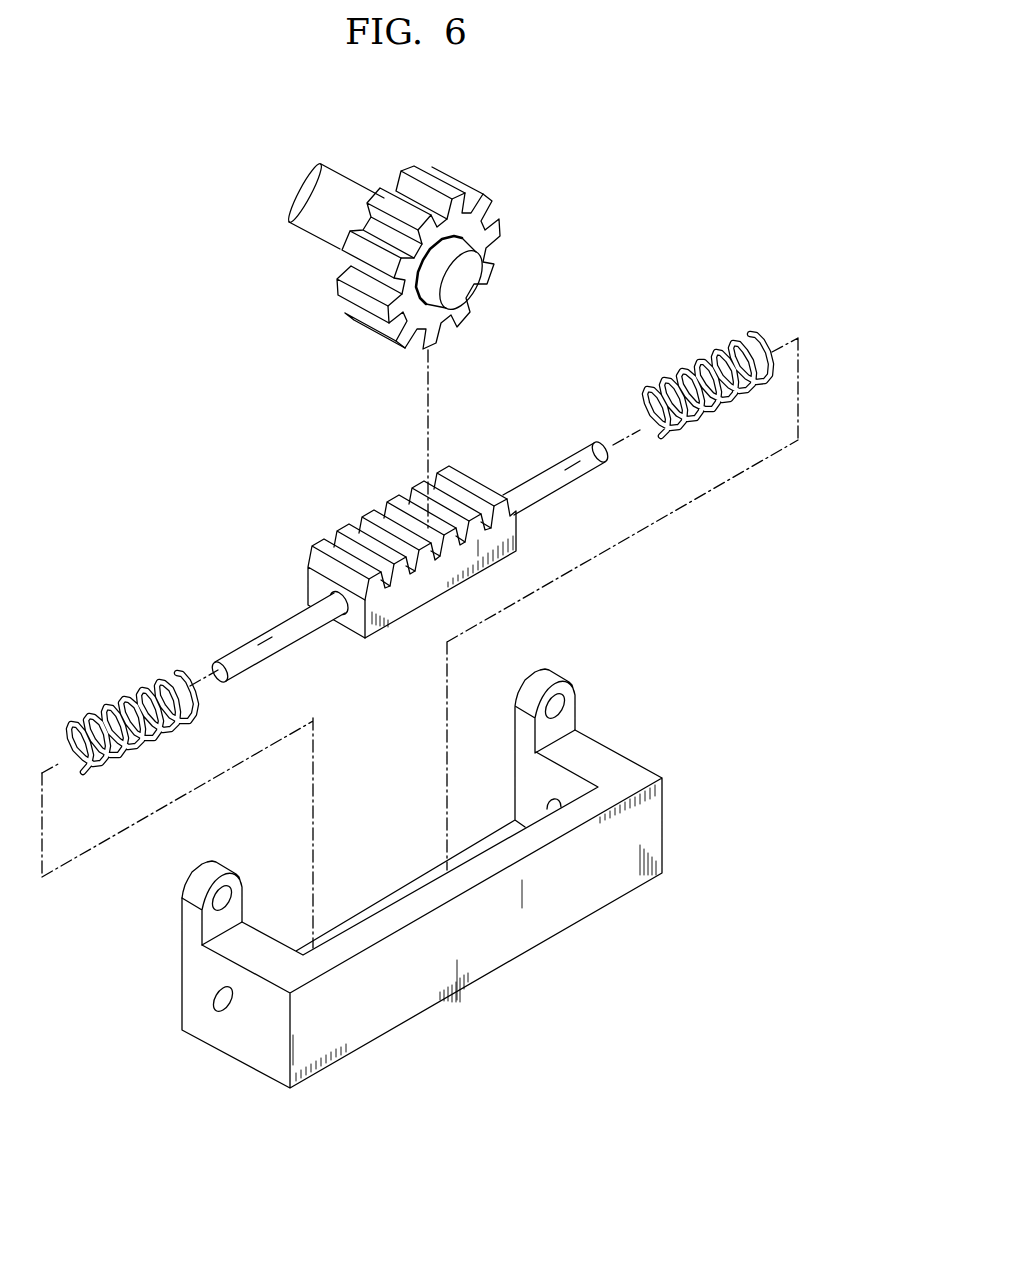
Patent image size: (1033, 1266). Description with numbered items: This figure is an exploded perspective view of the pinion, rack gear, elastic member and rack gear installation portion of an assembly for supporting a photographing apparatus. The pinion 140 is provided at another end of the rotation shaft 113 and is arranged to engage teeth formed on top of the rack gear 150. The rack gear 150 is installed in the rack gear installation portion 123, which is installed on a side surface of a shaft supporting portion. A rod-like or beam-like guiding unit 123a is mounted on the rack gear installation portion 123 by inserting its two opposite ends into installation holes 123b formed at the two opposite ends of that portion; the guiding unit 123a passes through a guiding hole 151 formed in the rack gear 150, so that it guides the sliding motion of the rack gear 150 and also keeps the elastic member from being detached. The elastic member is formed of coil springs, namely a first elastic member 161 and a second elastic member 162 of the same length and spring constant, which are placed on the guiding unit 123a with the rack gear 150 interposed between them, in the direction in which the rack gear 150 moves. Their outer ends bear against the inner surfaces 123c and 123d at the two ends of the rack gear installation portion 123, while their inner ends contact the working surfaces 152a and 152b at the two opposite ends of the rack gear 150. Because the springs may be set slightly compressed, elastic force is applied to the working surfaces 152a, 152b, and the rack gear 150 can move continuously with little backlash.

The rotation shaft 113 is at (345, 184).
The pinion 140 is at (452, 190).
The rack gear 150 is at (382, 602).
The guiding hole 151 is at (426, 568).
The working surface 152a is at (356, 620).
The working surface 152b is at (518, 518).
The first elastic member 161 is at (112, 708).
The second elastic member 162 is at (728, 348).
The rack gear installation portion 123 is at (590, 895).
The guiding unit 123a is at (237, 650).
The installation hole 123b is at (560, 760).
The inner surface 123c is at (258, 925).
The inner surface 123d is at (556, 803).